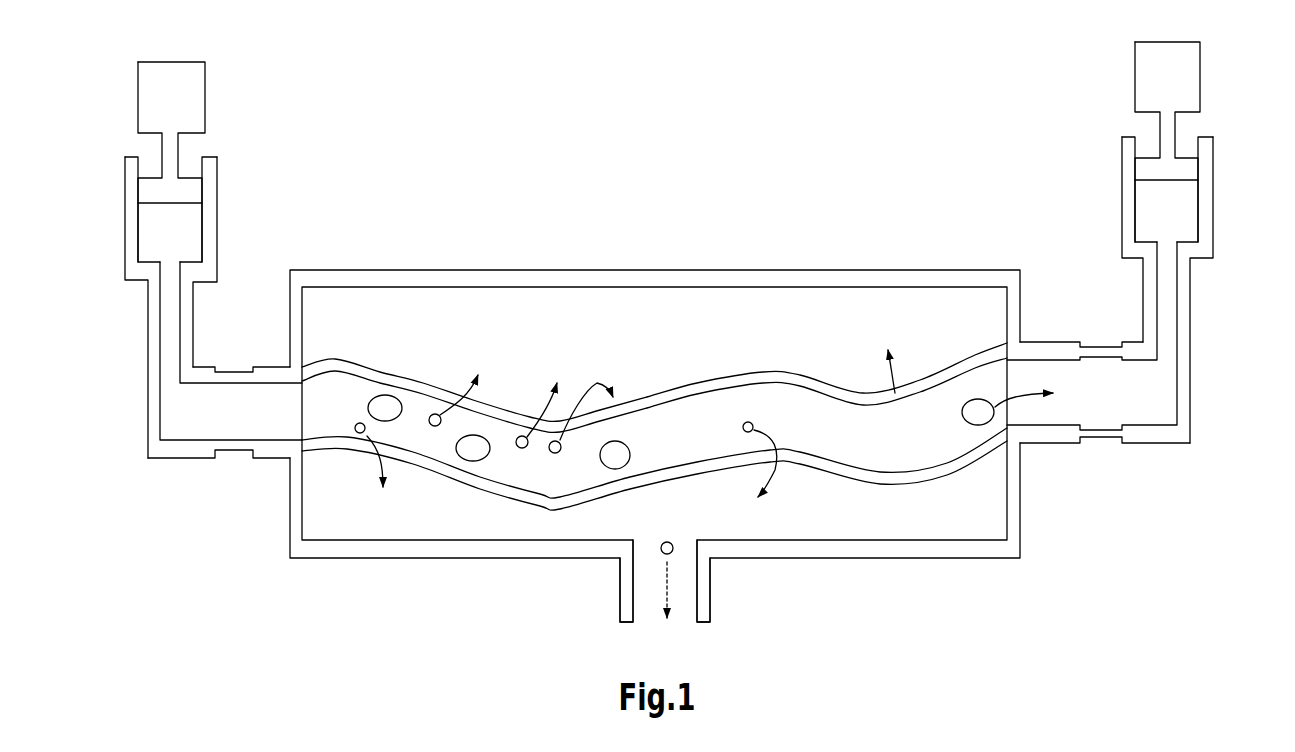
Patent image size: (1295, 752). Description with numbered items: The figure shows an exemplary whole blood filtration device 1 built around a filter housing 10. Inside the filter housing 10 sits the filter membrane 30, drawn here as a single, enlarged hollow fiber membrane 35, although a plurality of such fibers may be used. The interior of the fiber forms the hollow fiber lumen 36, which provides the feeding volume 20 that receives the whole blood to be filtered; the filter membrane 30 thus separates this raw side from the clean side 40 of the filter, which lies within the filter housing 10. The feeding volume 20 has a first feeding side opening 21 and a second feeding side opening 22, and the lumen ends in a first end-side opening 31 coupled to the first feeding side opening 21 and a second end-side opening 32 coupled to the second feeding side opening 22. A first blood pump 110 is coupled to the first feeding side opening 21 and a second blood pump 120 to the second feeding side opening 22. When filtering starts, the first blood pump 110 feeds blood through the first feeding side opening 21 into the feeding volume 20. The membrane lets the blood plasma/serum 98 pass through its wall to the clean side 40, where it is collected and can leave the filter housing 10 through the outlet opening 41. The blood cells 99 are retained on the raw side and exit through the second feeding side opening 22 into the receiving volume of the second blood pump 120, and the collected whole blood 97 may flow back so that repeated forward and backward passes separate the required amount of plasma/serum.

The whole blood filtration device 1 is at (312, 630).
The filter housing 10 is at (887, 284).
The feeding volume 20 is at (703, 403).
The first feeding side opening 21 is at (270, 397).
The second feeding side opening 22 is at (1030, 378).
The filter membrane 30 is at (420, 384).
The first end-side opening 31 is at (305, 417).
The second end-side opening 32 is at (1007, 412).
The hollow fiber membrane 35 is at (797, 457).
The hollow fiber lumen 36 is at (787, 403).
The clean side 40 is at (866, 497).
The outlet opening 41 is at (693, 584).
The whole blood 97 is at (210, 413).
The blood plasma/serum 98 is at (522, 448).
The blood cells 99 is at (618, 455).
The first blood pump 110 is at (238, 97).
The second blood pump 120 is at (1198, 126).